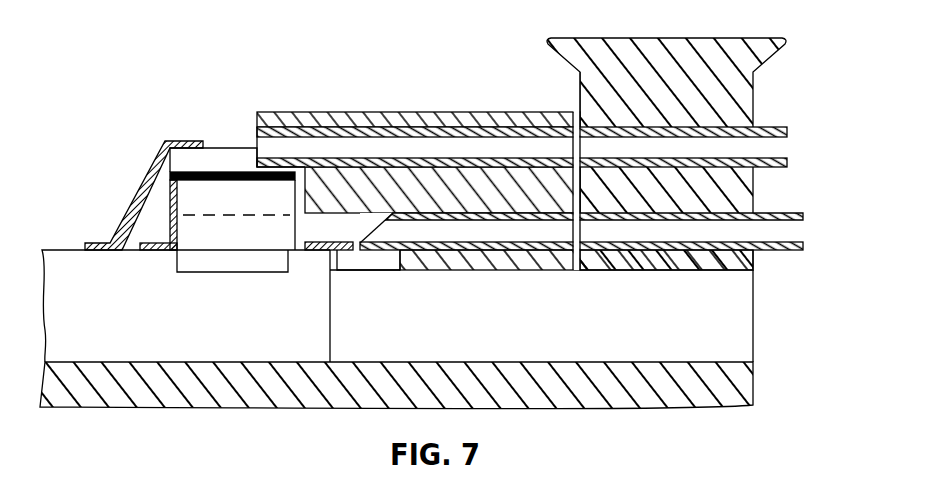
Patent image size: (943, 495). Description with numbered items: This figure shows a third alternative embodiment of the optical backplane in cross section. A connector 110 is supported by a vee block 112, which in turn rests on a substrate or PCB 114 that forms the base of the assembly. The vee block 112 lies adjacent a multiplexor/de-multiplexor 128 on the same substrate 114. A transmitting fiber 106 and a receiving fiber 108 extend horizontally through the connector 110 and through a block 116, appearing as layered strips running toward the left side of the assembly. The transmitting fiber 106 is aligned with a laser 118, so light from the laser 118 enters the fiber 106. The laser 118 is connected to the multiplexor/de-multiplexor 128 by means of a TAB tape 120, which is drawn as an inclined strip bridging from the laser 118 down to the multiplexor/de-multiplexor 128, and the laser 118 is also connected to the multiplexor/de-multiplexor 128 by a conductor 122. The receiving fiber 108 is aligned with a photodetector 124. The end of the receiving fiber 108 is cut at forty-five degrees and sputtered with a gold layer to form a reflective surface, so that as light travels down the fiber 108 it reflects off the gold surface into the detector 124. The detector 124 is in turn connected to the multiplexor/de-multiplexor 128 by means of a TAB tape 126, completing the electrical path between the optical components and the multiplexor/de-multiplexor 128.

The transmitting fiber 106 is at (788, 146).
The receiving fiber 108 is at (803, 233).
The connector 110 is at (753, 102).
The vee block 112 is at (558, 328).
The substrate 114 is at (723, 383).
The block 116 is at (425, 120).
The laser 118 is at (228, 162).
The TAB tape 120 is at (138, 192).
The conductor 122 is at (168, 220).
The photodetector 124 is at (362, 263).
The TAB tape 126 is at (312, 250).
The multiplexor/de-multiplexor 128 is at (212, 331).